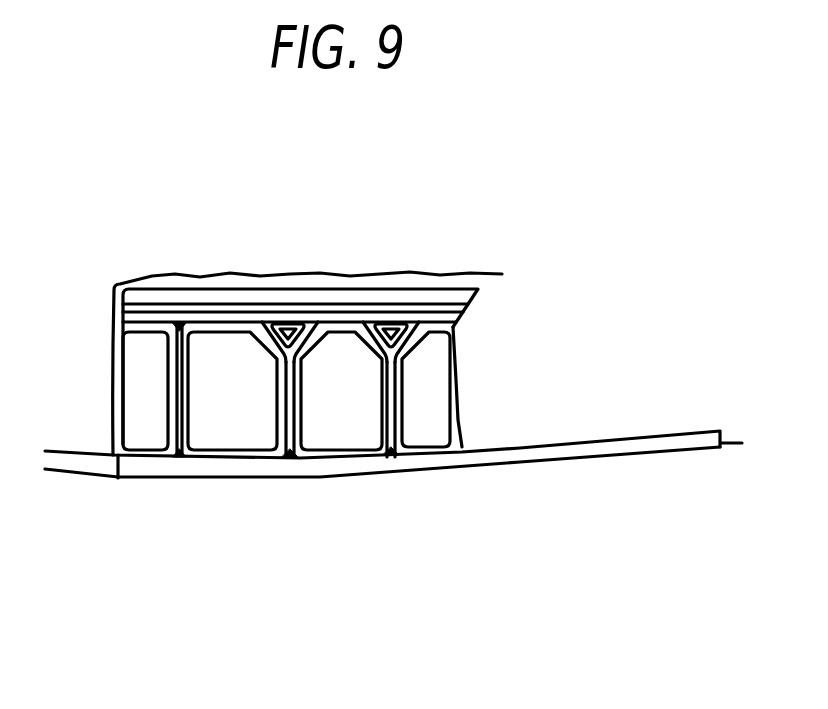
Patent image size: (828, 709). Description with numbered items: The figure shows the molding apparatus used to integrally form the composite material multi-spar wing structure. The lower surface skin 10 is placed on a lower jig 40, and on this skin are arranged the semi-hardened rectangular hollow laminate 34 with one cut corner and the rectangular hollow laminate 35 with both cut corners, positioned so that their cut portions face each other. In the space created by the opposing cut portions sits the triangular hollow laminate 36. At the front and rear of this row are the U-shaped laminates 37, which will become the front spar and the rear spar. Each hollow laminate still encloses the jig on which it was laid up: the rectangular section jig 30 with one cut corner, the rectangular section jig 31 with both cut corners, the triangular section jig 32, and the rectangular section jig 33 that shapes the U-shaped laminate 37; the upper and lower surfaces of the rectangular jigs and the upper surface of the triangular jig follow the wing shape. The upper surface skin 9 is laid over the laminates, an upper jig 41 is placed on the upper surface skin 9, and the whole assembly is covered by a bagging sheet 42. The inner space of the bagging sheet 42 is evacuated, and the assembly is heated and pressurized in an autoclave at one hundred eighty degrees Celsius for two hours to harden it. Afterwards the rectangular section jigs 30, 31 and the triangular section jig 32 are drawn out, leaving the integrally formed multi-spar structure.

The upper surface skin 9 is at (172, 315).
The lower surface skin 10 is at (538, 462).
The rectangular section jig with one cut corner 30 is at (242, 433).
The rectangular section jig with both cut corners 31 is at (337, 427).
The triangular section jig 32 is at (308, 326).
The rectangular section jig 33 is at (143, 380).
The rectangular hollow laminate with one cut corner 34 is at (188, 458).
The rectangular hollow laminate with both cut corners 35 is at (288, 460).
The triangular hollow laminate 36 is at (275, 322).
The U-shaped laminate 37 is at (140, 458).
The lower jig 40 is at (378, 517).
The upper jig 41 is at (296, 275).
The bagging sheet 42 is at (164, 274).